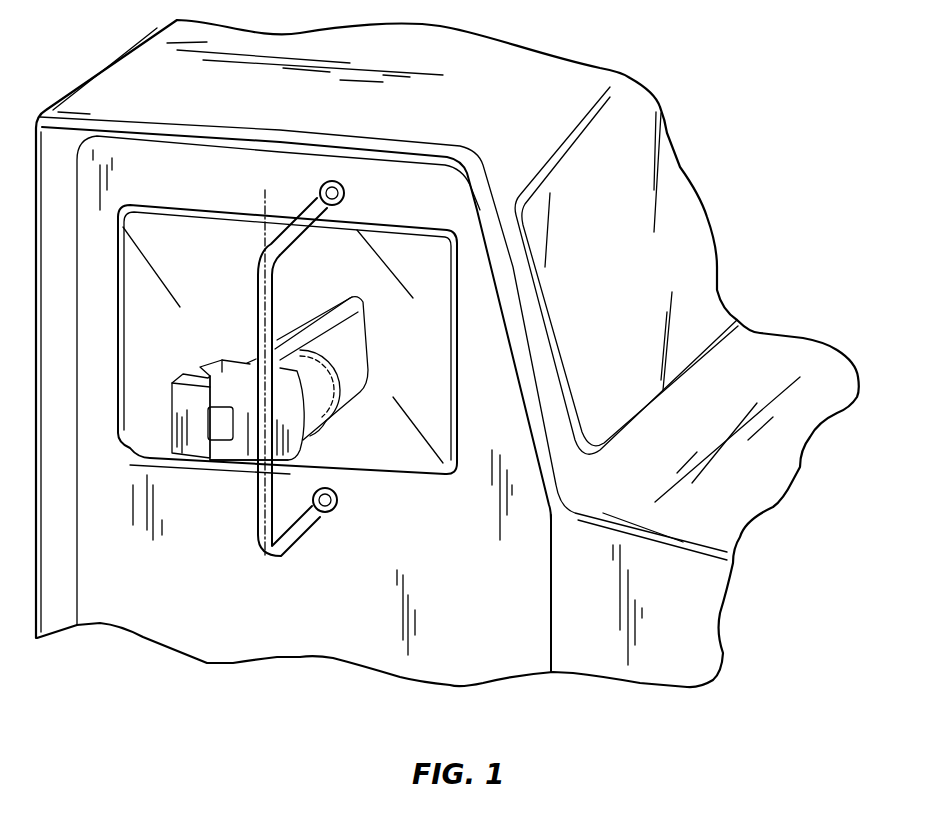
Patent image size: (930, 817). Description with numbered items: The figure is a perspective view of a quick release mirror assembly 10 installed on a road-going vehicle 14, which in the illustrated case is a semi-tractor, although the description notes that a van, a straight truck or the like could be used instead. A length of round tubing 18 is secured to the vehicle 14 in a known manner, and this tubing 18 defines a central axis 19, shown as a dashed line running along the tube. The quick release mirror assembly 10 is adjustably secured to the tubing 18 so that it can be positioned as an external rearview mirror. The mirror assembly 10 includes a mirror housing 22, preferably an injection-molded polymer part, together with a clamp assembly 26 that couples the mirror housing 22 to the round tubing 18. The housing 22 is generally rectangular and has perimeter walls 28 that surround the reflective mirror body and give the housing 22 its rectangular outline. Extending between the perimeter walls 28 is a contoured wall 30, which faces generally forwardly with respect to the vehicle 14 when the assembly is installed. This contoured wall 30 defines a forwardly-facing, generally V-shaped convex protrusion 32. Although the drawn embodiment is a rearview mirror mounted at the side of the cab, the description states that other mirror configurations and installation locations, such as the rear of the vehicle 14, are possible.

The quick release mirror assembly 10 is at (190, 357).
The vehicle 14 is at (757, 338).
The round tubing 18 is at (293, 238).
The central axis 19 is at (267, 558).
The mirror housing 22 is at (357, 340).
The clamp assembly 26 is at (227, 477).
The perimeter walls 28 is at (337, 310).
The contoured wall 30 is at (350, 390).
The convex protrusion 32 is at (313, 420).